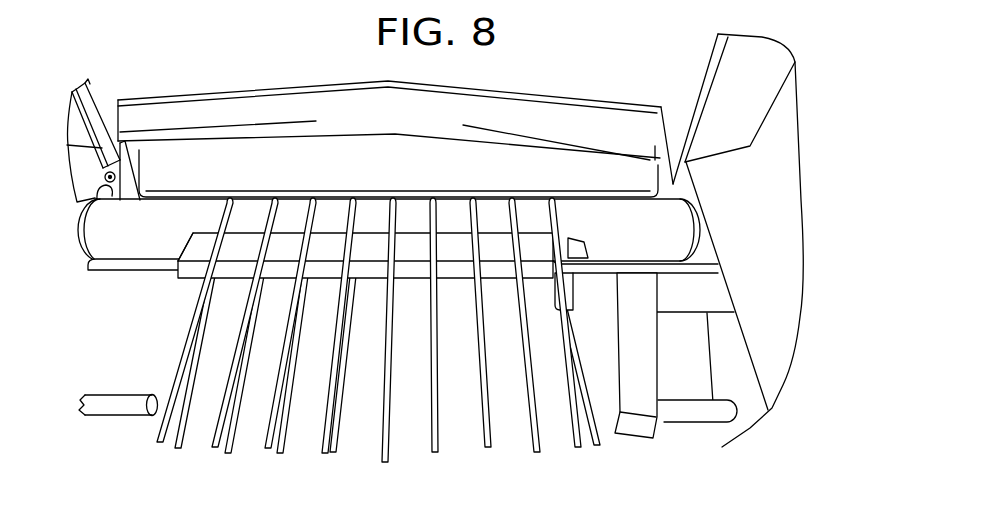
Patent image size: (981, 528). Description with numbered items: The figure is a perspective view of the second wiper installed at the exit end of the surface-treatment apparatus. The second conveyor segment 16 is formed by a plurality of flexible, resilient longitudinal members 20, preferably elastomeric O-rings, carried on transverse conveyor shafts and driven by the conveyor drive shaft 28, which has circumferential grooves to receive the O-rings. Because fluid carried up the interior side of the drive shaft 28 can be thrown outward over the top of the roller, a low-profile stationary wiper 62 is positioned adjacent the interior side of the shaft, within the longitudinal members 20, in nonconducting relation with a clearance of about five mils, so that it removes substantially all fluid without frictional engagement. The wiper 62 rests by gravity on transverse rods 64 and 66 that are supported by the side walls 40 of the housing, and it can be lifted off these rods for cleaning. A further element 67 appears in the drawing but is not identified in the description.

The second conveyor segment 16 is at (334, 196).
The longitudinal members 20 is at (395, 330).
The conveyor drive shaft 28 is at (148, 233).
The side walls 40 is at (93, 172).
The stationary wiper 62 is at (190, 275).
The transverse rod 64 is at (128, 271).
The transverse rod 66 is at (678, 414).
The hanger strap 67 is at (650, 354).